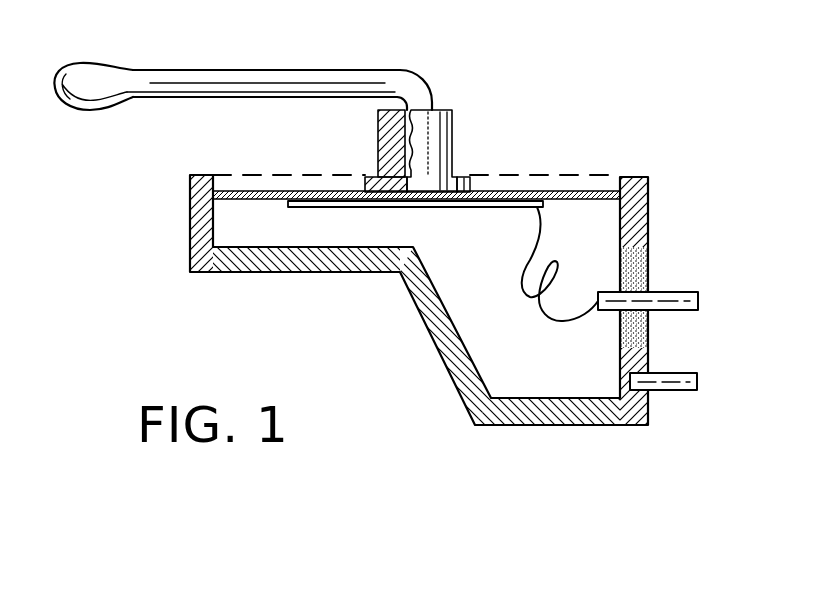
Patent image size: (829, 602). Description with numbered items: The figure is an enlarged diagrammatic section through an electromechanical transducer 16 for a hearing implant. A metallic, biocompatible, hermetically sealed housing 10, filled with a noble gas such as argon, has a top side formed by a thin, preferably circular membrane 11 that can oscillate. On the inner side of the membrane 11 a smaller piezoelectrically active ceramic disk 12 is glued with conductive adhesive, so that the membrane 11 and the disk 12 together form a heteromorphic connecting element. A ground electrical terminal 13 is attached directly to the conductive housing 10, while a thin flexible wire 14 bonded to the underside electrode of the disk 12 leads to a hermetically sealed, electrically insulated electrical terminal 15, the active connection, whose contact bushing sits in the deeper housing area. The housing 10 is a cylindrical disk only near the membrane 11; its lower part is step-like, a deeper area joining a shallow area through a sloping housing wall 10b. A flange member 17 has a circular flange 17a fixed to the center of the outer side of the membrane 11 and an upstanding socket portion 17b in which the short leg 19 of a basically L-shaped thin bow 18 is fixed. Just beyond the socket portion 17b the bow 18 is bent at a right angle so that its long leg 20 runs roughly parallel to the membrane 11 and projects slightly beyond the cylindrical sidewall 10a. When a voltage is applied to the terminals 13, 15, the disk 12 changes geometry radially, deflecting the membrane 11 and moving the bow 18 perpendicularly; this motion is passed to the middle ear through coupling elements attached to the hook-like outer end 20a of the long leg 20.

The housing 10 is at (406, 306).
The cylindrical sidewall 10a is at (190, 220).
The sloping housing wall 10b is at (432, 337).
The membrane 11 is at (567, 192).
The piezoelectrically active ceramic disk 12 is at (358, 203).
The electrical terminal (ground) 13 is at (667, 382).
The wire 14 is at (523, 294).
The electrical terminal 15 is at (673, 298).
The transducer 16 is at (536, 158).
The flange member 17 is at (445, 108).
The circular flange 17a is at (462, 176).
The upstanding socket portion 17b is at (457, 126).
The bow 18 is at (422, 58).
The short leg 19 is at (410, 138).
The long leg 20 is at (262, 76).
The hook-like outer end 20a is at (105, 95).